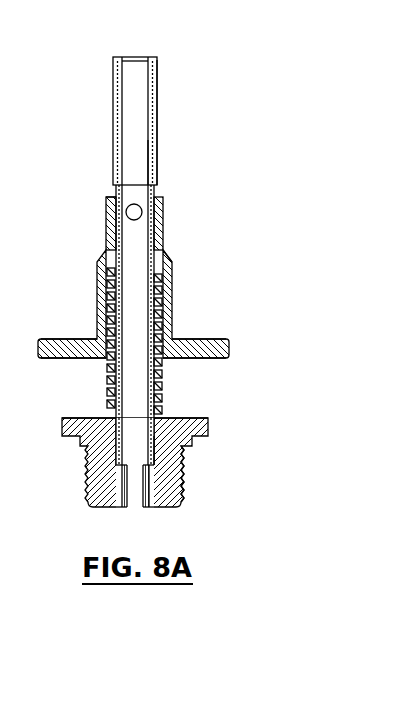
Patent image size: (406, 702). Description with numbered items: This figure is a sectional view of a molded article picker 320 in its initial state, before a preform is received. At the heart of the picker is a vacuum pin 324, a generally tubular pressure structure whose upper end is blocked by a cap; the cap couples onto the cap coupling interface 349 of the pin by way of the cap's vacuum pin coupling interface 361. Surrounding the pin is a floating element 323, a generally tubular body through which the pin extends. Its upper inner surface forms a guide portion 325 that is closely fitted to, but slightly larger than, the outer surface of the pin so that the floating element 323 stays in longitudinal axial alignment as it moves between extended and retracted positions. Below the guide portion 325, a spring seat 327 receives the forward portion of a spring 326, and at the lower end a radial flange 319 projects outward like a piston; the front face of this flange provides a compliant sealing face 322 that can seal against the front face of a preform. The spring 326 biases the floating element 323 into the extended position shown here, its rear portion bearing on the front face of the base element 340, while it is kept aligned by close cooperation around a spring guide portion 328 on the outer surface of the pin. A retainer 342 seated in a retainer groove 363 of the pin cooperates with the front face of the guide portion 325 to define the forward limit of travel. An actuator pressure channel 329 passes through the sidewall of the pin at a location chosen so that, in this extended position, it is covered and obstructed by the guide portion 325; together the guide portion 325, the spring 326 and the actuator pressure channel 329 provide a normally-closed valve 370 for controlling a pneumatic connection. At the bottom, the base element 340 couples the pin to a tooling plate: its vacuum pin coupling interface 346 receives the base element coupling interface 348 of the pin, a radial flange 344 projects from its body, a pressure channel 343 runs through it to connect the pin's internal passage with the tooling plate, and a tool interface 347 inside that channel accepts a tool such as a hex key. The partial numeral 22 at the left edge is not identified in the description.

The molded article picker 320 is at (277, 515).
The vacuum pin 324 is at (112, 88).
The cap coupling interface 349 is at (157, 130).
The vacuum pin coupling interface 361 is at (157, 177).
The guide portion 325 is at (157, 240).
The actuator pressure channel 329 is at (142, 210).
The retainer 342 is at (108, 197).
The normally-closed valve 370 is at (95, 197).
The retainer groove 363 is at (160, 222).
The floating element 323 is at (85, 264).
The spring seat 327 is at (168, 280).
The sealing face 322 is at (197, 339).
The radial flange 319 is at (200, 358).
The flange 22 is at (12, 339).
The spring 326 is at (112, 367).
The spring guide portion 328 is at (110, 392).
The base element 340 is at (180, 428).
The radial flange 344 is at (208, 430).
The base element coupling interface 348 is at (153, 445).
The vacuum pin coupling interface 346 is at (182, 478).
The pressure channel 343 is at (128, 508).
The tool interface 347 is at (150, 508).